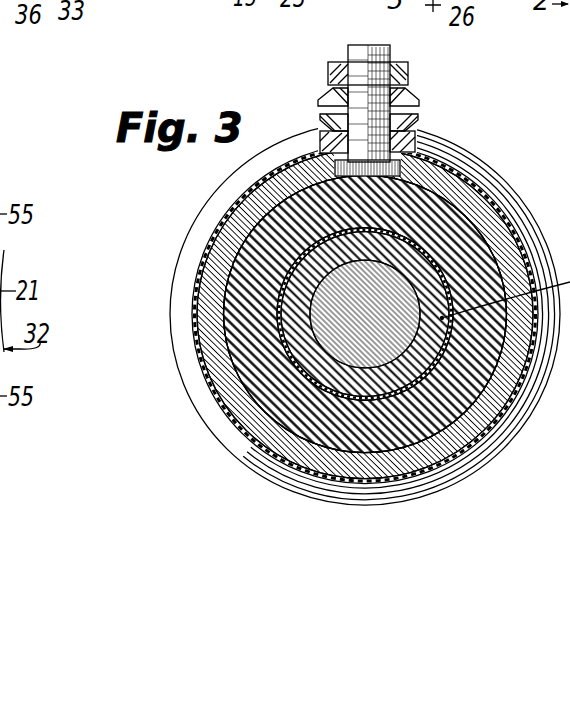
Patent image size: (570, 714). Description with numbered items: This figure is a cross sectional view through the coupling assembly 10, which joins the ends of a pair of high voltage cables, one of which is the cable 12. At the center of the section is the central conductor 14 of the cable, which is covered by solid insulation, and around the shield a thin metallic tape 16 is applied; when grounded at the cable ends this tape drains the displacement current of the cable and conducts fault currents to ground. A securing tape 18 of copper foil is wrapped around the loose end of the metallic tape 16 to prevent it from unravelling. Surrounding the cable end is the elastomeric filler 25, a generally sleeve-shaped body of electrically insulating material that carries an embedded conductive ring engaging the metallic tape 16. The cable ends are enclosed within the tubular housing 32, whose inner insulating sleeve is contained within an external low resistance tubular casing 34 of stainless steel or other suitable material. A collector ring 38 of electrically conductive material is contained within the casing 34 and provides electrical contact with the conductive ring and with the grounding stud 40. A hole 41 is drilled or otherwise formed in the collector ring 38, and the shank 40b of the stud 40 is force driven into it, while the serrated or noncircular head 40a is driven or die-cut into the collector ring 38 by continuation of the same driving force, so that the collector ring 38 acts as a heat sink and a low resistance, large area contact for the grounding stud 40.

The coupling assembly 10 is at (351, 277).
The high voltage cable 12 is at (425, 247).
The central conductor 14 is at (343, 349).
The metallic tape 16 is at (340, 350).
The securing tape 18 is at (292, 344).
The elastomeric filler 25 is at (480, 247).
The housing 32 is at (503, 449).
The casing 34 is at (222, 413).
The collector ring 38 is at (252, 211).
The grounding stud 40 is at (368, 44).
The head 40a is at (402, 172).
The shank 40b is at (318, 133).
The hole 41 is at (413, 130).